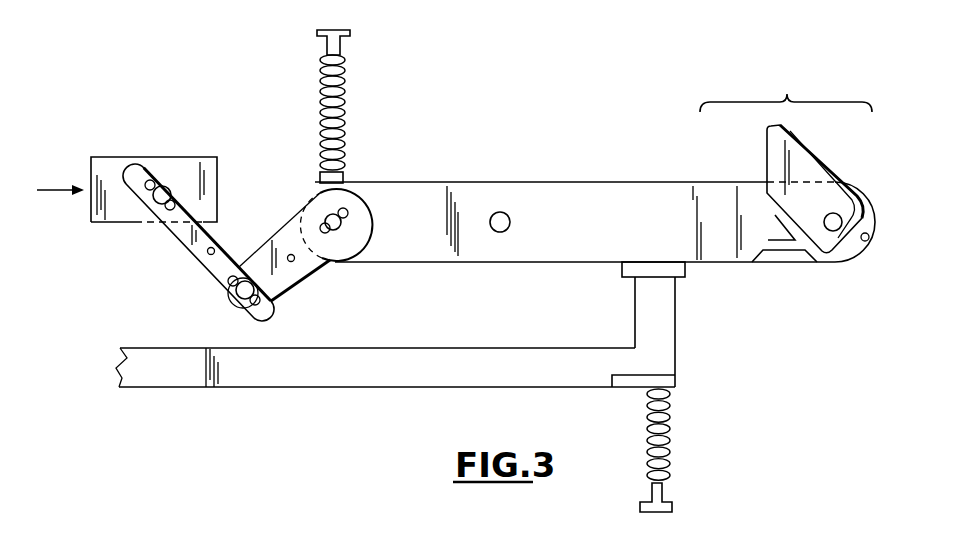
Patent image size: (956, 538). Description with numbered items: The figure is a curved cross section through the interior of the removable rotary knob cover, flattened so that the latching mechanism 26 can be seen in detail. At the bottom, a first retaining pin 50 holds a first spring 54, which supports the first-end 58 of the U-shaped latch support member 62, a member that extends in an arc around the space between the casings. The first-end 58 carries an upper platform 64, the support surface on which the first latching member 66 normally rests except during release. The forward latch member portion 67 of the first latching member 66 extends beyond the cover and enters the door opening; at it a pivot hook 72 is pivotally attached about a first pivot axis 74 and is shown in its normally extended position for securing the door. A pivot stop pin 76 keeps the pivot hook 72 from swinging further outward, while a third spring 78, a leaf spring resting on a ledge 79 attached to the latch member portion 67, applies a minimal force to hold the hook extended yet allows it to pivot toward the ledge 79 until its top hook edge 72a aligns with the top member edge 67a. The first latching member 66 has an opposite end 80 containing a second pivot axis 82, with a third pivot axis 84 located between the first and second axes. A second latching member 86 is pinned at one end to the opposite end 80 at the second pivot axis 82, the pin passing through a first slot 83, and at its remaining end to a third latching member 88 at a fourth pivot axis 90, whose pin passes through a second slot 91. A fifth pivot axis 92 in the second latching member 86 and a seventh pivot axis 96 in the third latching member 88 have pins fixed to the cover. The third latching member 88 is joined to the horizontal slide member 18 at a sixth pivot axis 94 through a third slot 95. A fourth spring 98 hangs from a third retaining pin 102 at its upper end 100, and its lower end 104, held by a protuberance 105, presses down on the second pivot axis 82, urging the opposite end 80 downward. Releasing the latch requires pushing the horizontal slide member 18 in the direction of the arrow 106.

The horizontal slide member 18 is at (125, 157).
The latching mechanism 26 is at (590, 99).
The first retaining pin 50 is at (672, 506).
The first spring 54 is at (672, 437).
The first-end 58 is at (690, 327).
The U-shaped latch support member 62 is at (263, 388).
The upper platform 64 is at (687, 270).
The first latching member 66 is at (677, 198).
The latch member portion 67 is at (794, 80).
The top member edge 67a is at (735, 182).
The pivot hook 72 is at (800, 165).
The top hook edge 72a is at (790, 132).
The first pivot axis 74 is at (838, 214).
The pivot stop pin 76 is at (863, 243).
The third spring 78 is at (775, 217).
The ledge 79 is at (785, 262).
The opposite end 80 is at (372, 183).
The second pivot axis 82 is at (362, 238).
The first slot 83 is at (348, 221).
The third pivot axis 84 is at (511, 222).
The second latching member 86 is at (270, 238).
The third latching member 88 is at (190, 256).
The fourth pivot axis 90 is at (248, 310).
The second slot 91 is at (230, 289).
The fifth pivot axis 92 is at (292, 261).
The sixth pivot axis 94 is at (172, 182).
The third slot 95 is at (157, 205).
The seventh pivot axis 96 is at (213, 249).
The fourth spring 98 is at (345, 102).
The upper end 100 is at (344, 60).
The third retaining pin 102 is at (346, 31).
The lower end 104 is at (343, 176).
The protuberance 105 is at (312, 186).
The arrow 106 is at (55, 188).